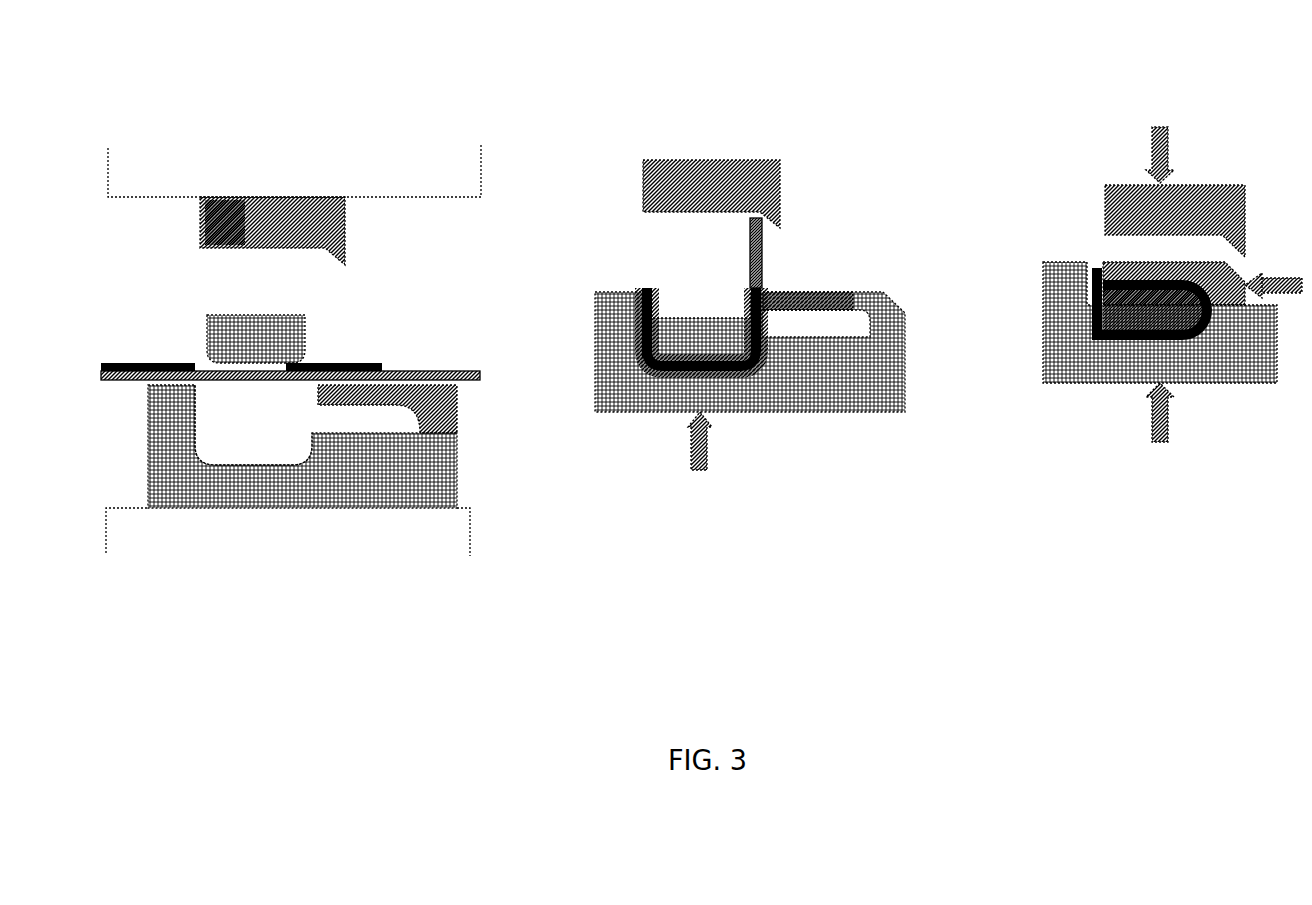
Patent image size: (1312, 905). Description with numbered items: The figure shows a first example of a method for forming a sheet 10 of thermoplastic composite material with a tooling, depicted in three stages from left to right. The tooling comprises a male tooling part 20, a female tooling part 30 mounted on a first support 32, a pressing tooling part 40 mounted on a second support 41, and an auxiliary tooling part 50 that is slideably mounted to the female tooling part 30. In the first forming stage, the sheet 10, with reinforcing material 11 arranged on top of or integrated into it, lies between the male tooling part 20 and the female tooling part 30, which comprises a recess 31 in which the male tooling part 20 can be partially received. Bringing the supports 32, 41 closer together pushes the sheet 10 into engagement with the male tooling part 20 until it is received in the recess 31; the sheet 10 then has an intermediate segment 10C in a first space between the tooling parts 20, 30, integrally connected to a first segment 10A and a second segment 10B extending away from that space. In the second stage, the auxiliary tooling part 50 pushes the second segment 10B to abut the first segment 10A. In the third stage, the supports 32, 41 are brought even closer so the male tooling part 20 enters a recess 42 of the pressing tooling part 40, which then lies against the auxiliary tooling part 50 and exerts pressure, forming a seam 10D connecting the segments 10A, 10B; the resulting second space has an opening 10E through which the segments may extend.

The sheet of thermoplastic composite material 10 is at (406, 370).
The reinforcing material 11 is at (342, 363).
The male tooling part 20 is at (253, 327).
The female tooling part 30 is at (447, 472).
The recess 31 is at (250, 453).
The first support 32 is at (430, 545).
The pressing tooling part 40 is at (323, 227).
The second support 41 is at (468, 170).
The recess 42 is at (237, 253).
The auxiliary tooling part 50 is at (448, 398).
The first segment 10A is at (650, 293).
The second segment 10B is at (760, 273).
The intermediate segment 10C is at (688, 370).
The seam 10D is at (1085, 289).
The opening 10E is at (1098, 256).